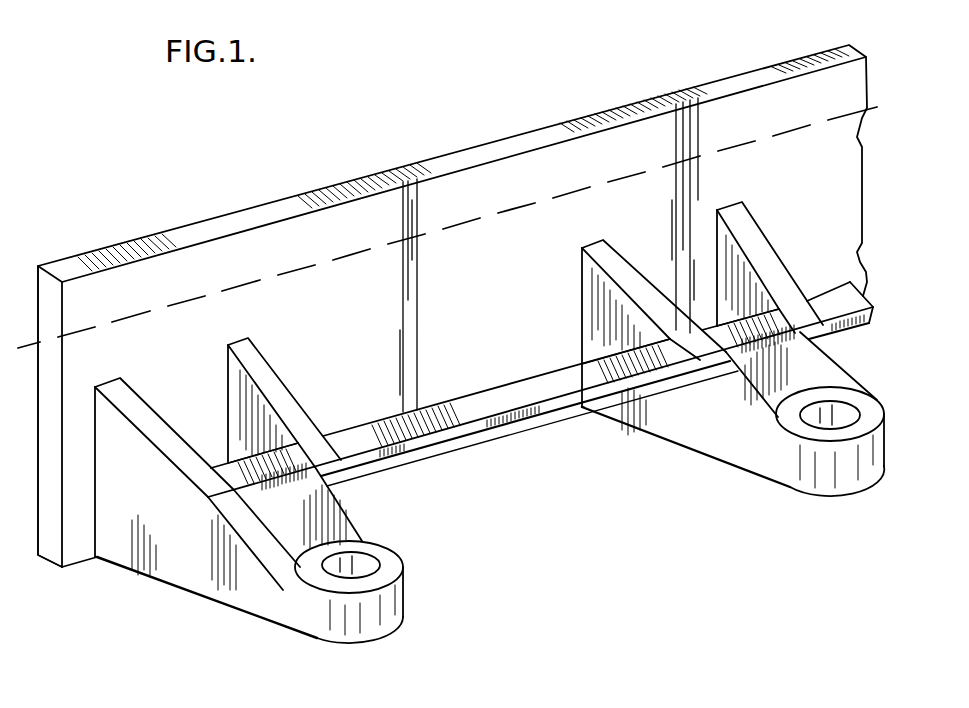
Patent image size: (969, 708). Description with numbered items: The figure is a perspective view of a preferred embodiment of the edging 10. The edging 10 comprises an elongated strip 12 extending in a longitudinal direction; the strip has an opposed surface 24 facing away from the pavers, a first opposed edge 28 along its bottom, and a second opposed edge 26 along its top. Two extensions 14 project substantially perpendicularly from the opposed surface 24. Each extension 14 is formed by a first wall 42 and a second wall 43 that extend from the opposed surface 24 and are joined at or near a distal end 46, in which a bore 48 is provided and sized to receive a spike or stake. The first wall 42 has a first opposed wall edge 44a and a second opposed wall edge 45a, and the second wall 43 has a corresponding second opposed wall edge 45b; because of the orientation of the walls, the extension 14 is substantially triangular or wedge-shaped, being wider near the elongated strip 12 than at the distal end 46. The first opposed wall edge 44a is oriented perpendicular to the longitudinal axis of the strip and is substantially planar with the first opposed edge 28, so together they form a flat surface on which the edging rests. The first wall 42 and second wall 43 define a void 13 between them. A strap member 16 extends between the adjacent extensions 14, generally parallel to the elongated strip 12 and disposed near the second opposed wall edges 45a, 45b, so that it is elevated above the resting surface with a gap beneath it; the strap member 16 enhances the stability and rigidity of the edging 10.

The edging 10 is at (94, 215).
The elongated strip 12 is at (475, 150).
The void 13 is at (290, 527).
The extension 14 is at (207, 492).
The strap member 16 is at (455, 403).
The opposed surface 24 is at (815, 205).
The second opposed edge 26 is at (292, 197).
The first opposed edge 28 is at (62, 568).
The first wall 42 is at (151, 515).
The second wall 43 is at (360, 488).
The first opposed wall edge 44a is at (178, 590).
The second opposed wall edge 45a is at (190, 440).
The second opposed wall edge 45b is at (365, 519).
The distal end 46 is at (378, 622).
The bore 48 is at (338, 575).